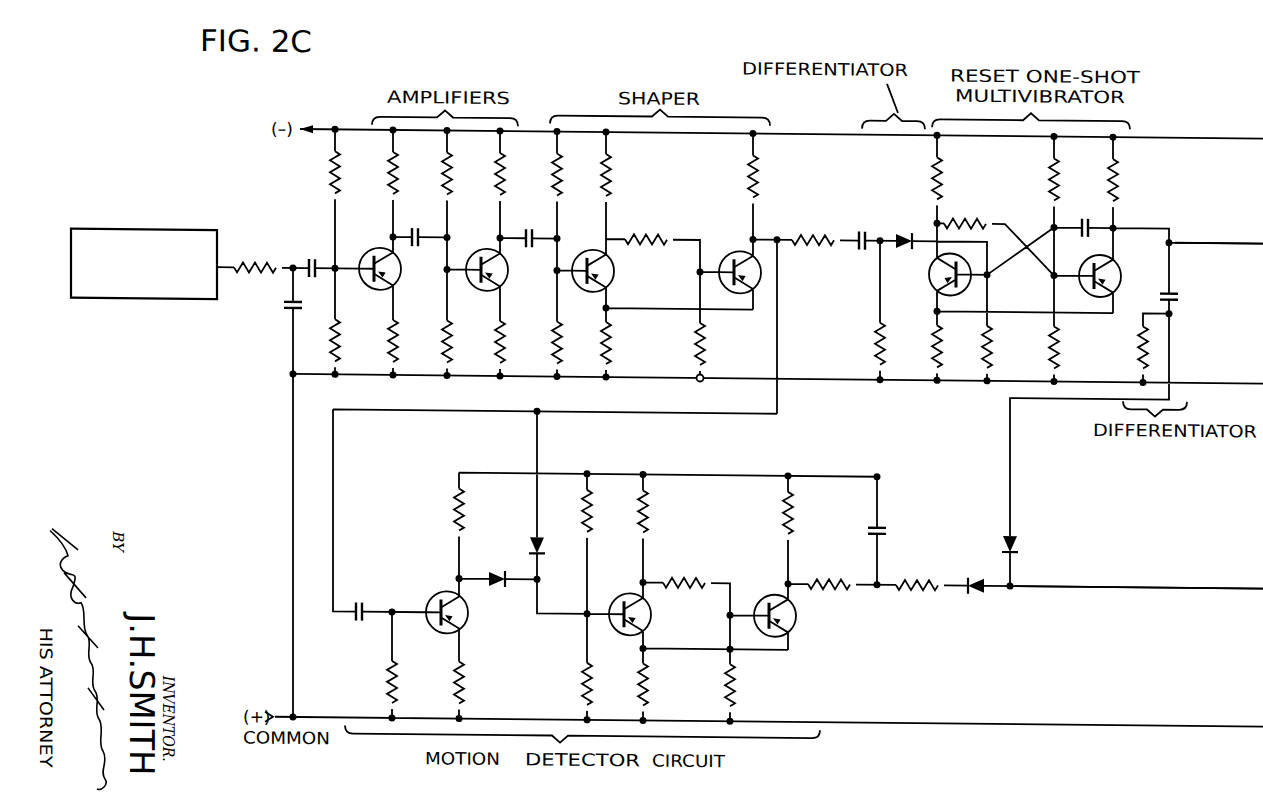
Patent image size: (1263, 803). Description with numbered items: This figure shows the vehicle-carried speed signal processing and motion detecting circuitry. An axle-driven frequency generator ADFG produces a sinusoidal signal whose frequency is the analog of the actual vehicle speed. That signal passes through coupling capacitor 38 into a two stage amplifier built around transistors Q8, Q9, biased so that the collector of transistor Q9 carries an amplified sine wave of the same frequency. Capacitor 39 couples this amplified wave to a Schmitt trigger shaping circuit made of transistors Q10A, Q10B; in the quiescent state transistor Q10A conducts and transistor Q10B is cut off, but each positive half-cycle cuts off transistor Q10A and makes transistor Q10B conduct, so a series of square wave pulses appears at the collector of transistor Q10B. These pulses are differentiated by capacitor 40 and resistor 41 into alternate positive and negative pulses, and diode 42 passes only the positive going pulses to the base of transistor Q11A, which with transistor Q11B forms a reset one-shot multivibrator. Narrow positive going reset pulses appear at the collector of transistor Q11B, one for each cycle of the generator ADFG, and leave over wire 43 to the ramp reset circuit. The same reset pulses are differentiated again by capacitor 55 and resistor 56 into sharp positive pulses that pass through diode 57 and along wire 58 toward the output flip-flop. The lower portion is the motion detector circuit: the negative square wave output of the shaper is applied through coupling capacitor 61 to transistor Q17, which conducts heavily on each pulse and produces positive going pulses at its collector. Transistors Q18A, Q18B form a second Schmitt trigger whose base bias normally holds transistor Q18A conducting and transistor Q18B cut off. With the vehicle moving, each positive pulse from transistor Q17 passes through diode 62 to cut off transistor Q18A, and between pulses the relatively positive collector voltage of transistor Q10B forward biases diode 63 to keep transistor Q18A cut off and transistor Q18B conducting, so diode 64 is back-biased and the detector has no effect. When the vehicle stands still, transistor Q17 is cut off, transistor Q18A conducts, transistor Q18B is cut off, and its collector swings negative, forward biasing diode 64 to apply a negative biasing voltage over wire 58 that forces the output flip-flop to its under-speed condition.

The coupling capacitor 38 is at (307, 256).
The capacitor 39 is at (530, 226).
The capacitor 40 is at (859, 226).
The resistor 41 is at (887, 332).
The diode 42 is at (906, 254).
The wire 43 is at (1228, 235).
The capacitor 55 is at (1176, 286).
The resistor 56 is at (1138, 330).
The diode 57 is at (1018, 537).
The wire 58 is at (1221, 580).
The coupling capacitor 61 is at (364, 607).
The diode 62 is at (493, 569).
The diode 63 is at (545, 537).
The diode 64 is at (979, 569).
The axle-driven frequency generator ADFG is at (176, 230).
The transistor Q8 is at (393, 274).
The transistor Q9 is at (500, 274).
The transistor Q10A is at (607, 275).
The transistor Q10B is at (729, 254).
The transistor Q11A is at (934, 278).
The transistor Q11B is at (1116, 262).
The transistor Q17 is at (462, 620).
The transistor Q18A is at (648, 617).
The transistor Q18B is at (794, 617).